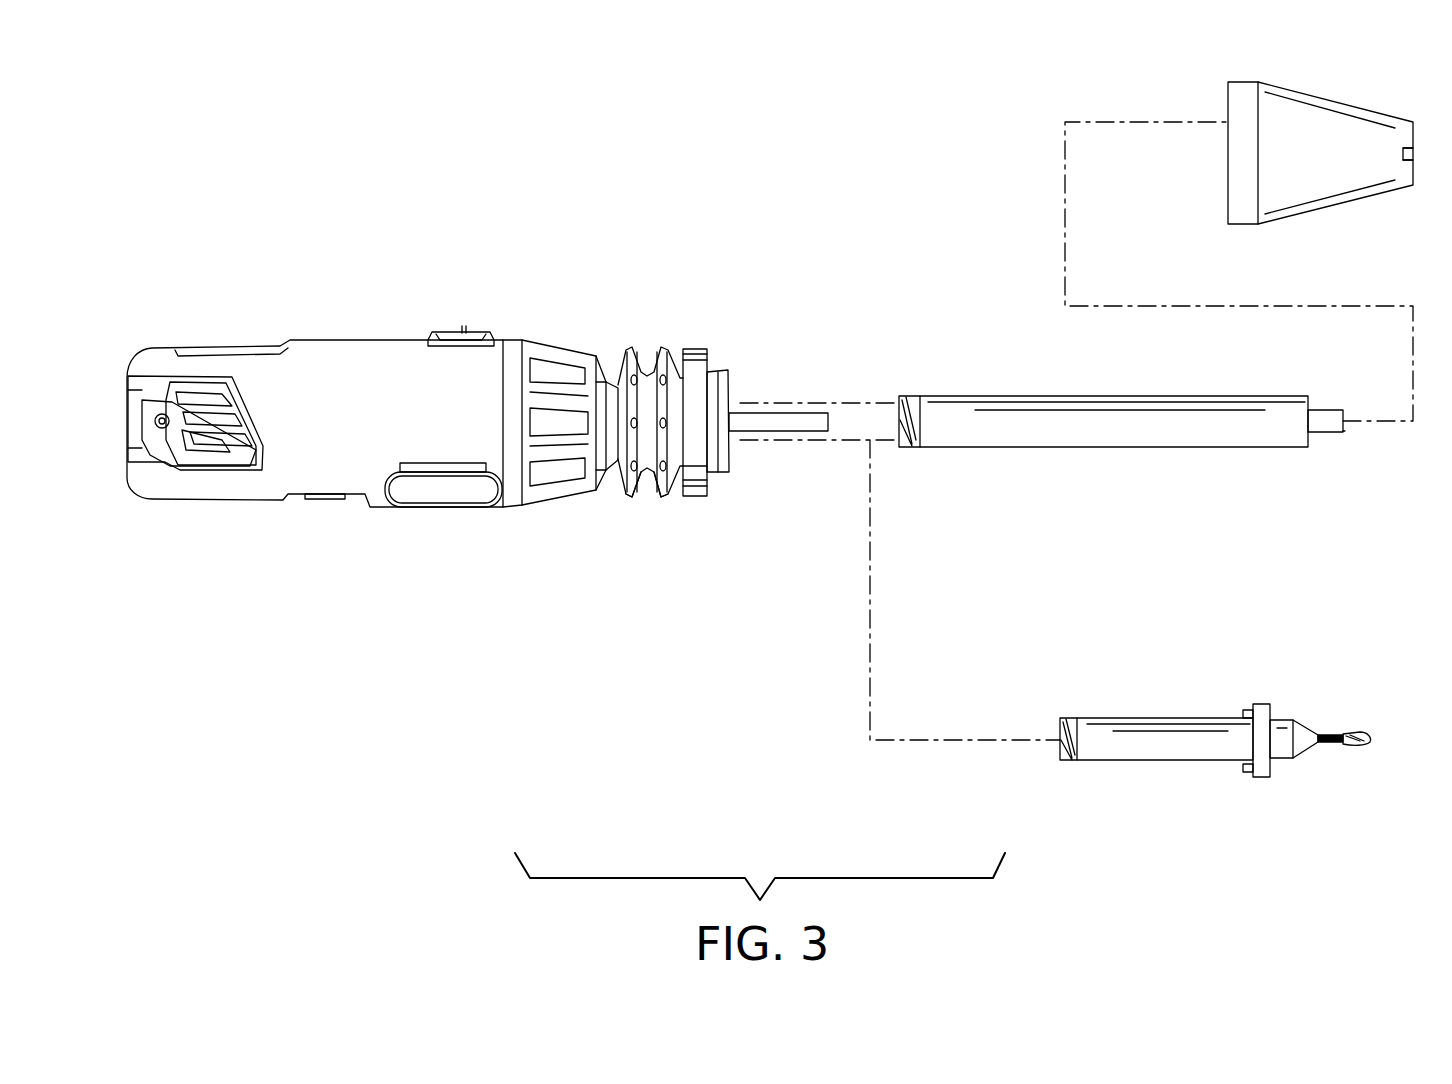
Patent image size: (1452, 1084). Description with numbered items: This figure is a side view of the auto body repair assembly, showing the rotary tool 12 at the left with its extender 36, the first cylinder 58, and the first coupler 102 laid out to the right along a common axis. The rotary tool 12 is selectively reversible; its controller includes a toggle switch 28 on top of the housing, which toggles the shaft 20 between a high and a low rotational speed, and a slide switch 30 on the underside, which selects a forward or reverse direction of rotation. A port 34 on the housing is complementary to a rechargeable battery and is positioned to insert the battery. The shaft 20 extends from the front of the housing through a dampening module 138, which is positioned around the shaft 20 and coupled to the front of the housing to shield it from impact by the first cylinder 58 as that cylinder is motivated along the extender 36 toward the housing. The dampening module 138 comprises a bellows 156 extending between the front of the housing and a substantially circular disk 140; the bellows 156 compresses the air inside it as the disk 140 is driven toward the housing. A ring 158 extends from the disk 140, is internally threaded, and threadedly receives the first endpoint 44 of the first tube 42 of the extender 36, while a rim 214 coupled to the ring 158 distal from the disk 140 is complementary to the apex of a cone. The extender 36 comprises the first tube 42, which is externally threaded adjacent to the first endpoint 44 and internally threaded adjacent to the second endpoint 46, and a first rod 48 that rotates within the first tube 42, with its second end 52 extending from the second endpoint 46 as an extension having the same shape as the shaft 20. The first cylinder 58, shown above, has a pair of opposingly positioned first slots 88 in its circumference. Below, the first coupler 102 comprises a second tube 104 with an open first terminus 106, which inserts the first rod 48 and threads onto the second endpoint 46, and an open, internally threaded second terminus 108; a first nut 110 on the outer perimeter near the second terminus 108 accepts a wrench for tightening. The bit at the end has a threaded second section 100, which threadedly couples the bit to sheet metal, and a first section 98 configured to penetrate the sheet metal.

The rotary tool 12 is at (356, 366).
The toggle switch 28 is at (473, 332).
The slide switch 30 is at (325, 500).
The port 34 is at (445, 492).
The dampening module 138 is at (645, 395).
The bellows 156 is at (633, 498).
The disk 140 is at (697, 497).
The ring 158 is at (716, 456).
The rim 214 is at (742, 382).
The shaft 20 is at (784, 420).
The first endpoint 44 is at (916, 415).
The first tube 42 is at (1106, 395).
The second endpoint 46 is at (1270, 420).
The first rod 48 is at (1323, 410).
The second end 52 is at (1343, 431).
The extender 36 is at (1101, 407).
The first cylinder 58 is at (1350, 110).
The first slots 88 is at (1413, 156).
The first coupler 102 is at (1211, 685).
The second tube 104 is at (1166, 718).
The first terminus 106 is at (1060, 742).
The first nut 110 is at (1261, 706).
The second terminus 108 is at (1290, 760).
The second section 100 is at (1331, 735).
The first section 98 is at (1358, 732).